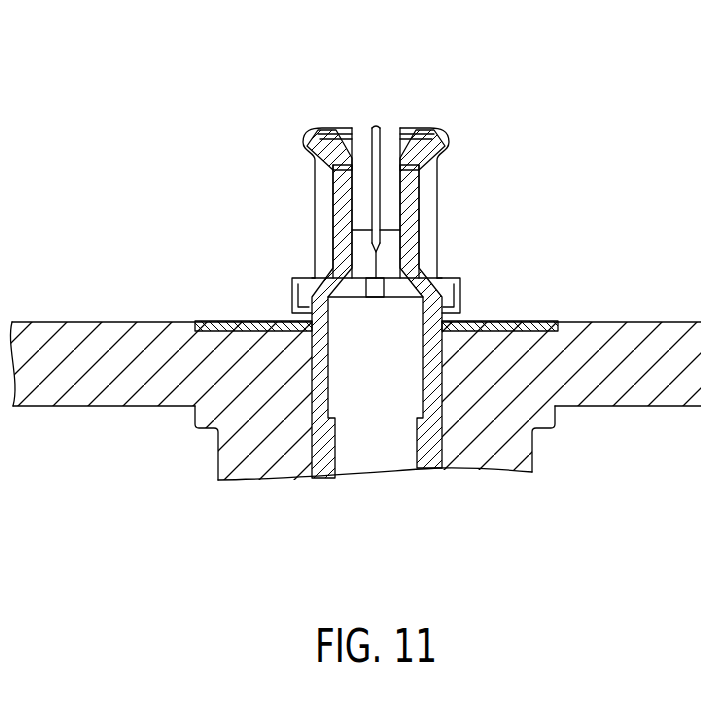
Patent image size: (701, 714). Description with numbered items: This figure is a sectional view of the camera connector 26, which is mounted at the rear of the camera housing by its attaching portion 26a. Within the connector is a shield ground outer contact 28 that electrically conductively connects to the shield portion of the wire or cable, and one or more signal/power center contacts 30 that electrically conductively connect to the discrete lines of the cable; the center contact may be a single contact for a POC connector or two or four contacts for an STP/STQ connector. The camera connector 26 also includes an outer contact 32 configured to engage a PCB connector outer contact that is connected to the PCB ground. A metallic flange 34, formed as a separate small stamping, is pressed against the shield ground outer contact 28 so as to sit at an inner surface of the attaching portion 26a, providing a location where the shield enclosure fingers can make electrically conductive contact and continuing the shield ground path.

The camera connector 26 is at (572, 471).
The attaching portion 26a is at (612, 335).
The shield ground outer contact 28 is at (312, 440).
The signal/power center contact 30 is at (382, 296).
The outer contact 32 is at (280, 104).
The metallic flange 34 is at (493, 325).